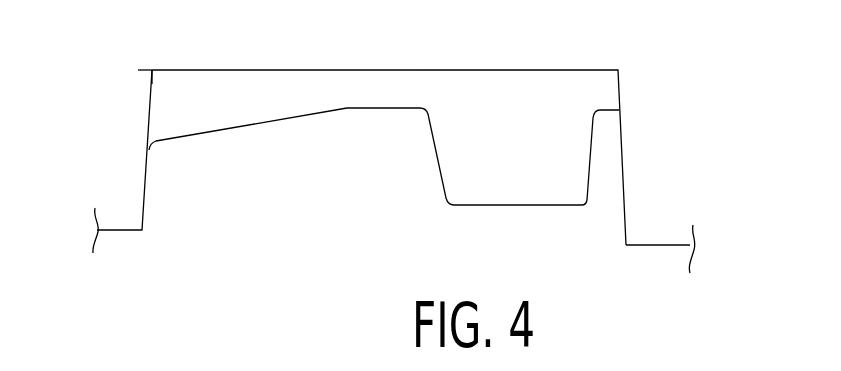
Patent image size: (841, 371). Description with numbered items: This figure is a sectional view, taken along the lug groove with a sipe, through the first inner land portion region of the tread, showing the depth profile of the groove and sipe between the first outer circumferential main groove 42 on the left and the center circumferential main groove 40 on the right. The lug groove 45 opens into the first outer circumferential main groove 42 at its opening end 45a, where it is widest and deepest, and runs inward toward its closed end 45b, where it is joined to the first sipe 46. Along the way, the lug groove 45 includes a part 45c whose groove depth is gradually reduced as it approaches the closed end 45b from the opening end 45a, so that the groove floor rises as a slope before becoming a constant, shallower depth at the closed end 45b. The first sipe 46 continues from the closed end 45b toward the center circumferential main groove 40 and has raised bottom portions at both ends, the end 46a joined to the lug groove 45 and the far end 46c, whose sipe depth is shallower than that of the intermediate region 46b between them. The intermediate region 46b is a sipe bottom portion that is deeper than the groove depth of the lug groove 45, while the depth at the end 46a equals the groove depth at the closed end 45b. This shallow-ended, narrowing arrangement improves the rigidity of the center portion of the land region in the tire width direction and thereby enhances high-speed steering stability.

The center circumferential main groove 40 is at (655, 160).
The first outer circumferential main groove 42 is at (120, 173).
The lug groove 45 is at (203, 100).
The opening end 45a is at (161, 77).
The closed end 45b is at (368, 100).
The part having gradually reduced groove depth 45c is at (185, 132).
The first sipe 46 is at (572, 85).
The end of first sipe 46a is at (415, 103).
The intermediate region 46b is at (507, 205).
The end of first sipe 46c is at (613, 107).